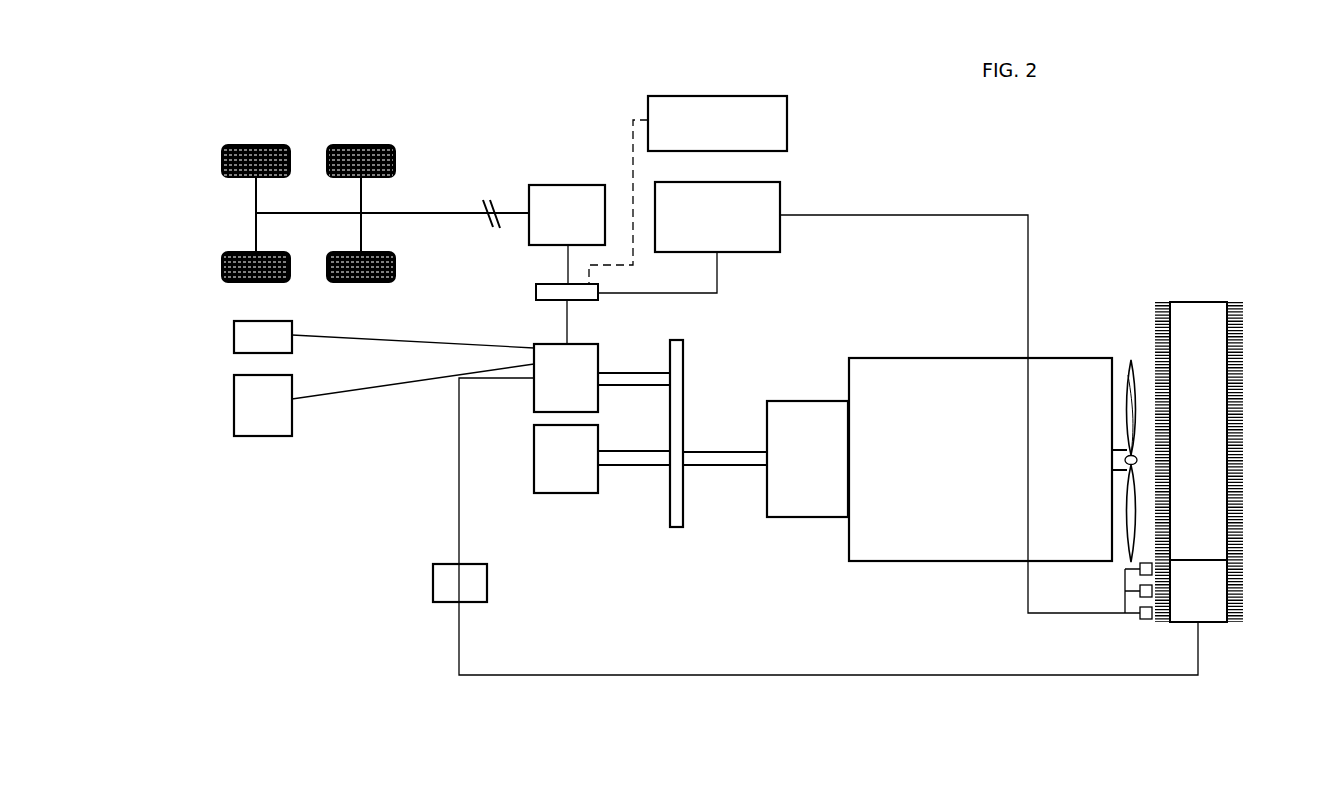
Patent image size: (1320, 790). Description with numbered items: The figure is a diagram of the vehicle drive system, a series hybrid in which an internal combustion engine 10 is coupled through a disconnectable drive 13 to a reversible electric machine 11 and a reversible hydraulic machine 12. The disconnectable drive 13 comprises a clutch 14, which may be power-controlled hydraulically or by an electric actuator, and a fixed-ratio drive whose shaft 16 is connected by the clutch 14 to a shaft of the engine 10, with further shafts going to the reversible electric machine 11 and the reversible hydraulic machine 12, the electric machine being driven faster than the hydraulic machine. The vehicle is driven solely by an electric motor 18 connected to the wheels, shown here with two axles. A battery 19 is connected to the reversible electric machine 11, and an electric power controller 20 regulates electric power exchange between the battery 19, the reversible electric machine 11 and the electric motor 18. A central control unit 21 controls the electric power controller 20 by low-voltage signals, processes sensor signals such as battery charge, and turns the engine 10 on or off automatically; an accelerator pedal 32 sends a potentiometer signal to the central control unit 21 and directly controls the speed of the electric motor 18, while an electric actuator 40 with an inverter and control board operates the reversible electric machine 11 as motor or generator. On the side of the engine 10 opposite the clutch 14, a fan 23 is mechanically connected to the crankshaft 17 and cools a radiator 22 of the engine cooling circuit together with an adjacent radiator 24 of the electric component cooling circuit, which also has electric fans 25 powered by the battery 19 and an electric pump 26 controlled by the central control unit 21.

The internal combustion engine 10 is at (903, 542).
The reversible electric machine 11 is at (540, 393).
The reversible hydraulic machine 12 is at (583, 485).
The disconnectable drive 13 is at (718, 486).
The clutch 14 is at (815, 508).
The shaft 16 is at (738, 458).
The crankshaft 17 is at (1125, 386).
The electric motor 18 is at (575, 197).
The battery 19 is at (765, 228).
The electric power controller 20 is at (534, 291).
The central control unit 21 is at (770, 135).
The radiator 22 is at (1203, 312).
The fan 23 is at (1135, 378).
The radiator 24 is at (1212, 614).
The electric fans 25 is at (1146, 621).
The electric pump 26 is at (450, 587).
The accelerator pedal 32 is at (252, 334).
The electric actuator 40 is at (262, 417).